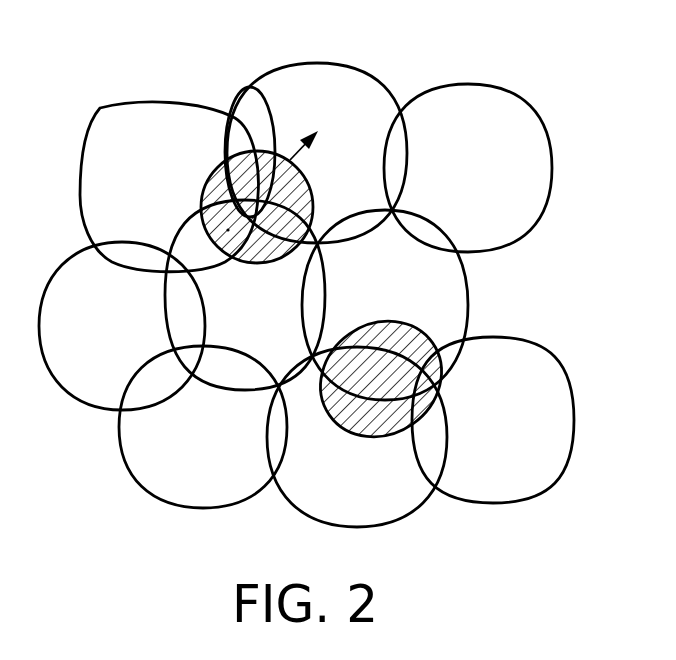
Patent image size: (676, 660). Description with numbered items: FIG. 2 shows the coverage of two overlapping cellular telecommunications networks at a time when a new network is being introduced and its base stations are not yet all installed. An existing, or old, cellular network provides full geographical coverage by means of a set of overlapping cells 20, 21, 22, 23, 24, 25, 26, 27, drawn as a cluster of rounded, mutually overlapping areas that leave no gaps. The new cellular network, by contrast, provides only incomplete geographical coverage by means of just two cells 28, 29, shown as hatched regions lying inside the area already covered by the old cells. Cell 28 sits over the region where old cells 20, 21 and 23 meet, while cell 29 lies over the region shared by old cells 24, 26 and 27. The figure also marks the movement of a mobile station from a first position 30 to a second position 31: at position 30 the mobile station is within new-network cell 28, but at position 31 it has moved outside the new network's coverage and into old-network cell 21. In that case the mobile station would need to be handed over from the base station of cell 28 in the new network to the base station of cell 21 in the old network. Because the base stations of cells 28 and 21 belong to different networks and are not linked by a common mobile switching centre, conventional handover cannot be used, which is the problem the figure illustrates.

The cell 20 is at (159, 176).
The cell 21 is at (333, 121).
The cell 22 is at (488, 173).
The cell 23 is at (110, 341).
The cell 24 is at (412, 296).
The cell 25 is at (218, 443).
The cell 26 is at (364, 488).
The cell 27 is at (518, 432).
The cell 28 is at (248, 88).
The cell 29 is at (422, 352).
The position 30 is at (211, 245).
The position 31 is at (316, 133).